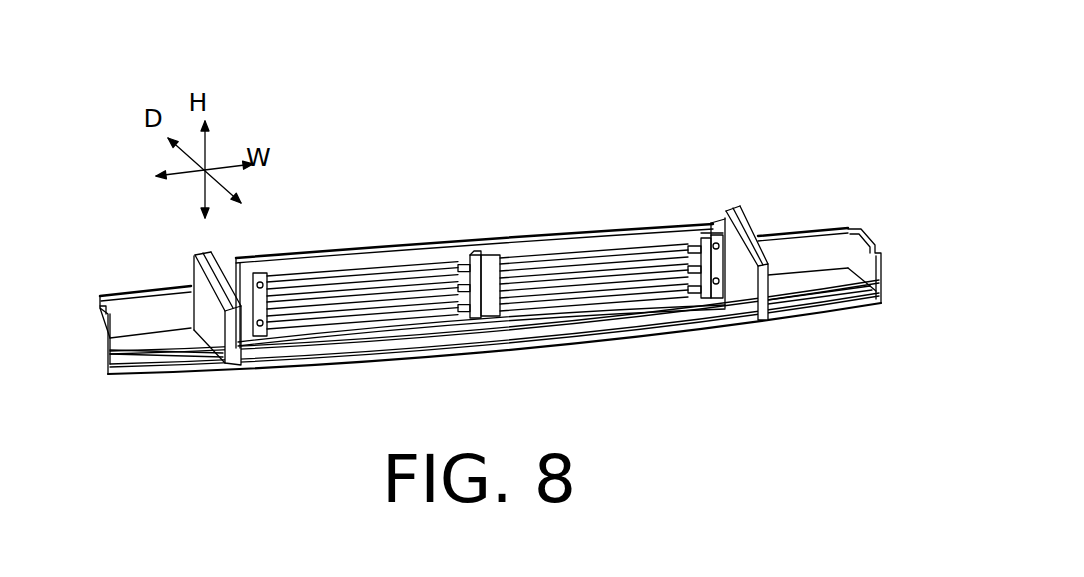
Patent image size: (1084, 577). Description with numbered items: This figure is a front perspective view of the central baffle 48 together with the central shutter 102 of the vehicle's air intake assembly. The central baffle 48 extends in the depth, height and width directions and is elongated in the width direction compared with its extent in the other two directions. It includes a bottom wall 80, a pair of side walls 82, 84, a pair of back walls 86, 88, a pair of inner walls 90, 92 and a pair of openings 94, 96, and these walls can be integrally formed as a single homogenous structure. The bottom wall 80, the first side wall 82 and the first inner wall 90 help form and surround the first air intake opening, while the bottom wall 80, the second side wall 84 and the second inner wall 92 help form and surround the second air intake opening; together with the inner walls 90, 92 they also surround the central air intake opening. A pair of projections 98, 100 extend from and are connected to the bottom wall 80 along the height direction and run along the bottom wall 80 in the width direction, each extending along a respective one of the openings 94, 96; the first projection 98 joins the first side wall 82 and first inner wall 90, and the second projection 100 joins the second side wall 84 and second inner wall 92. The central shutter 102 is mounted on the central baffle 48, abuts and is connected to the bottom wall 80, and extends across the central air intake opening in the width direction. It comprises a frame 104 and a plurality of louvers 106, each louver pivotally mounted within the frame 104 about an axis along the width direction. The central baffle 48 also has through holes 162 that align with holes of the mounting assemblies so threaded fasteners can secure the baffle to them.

The central baffle 48 is at (681, 347).
The bottom wall 80 is at (387, 362).
The first side wall 82 is at (875, 275).
The second side wall 84 is at (93, 337).
The first back wall 86 is at (827, 220).
The second back wall 88 is at (117, 284).
The first inner wall 90 is at (740, 208).
The second inner wall 92 is at (185, 252).
The first opening 94 is at (823, 275).
The second opening 96 is at (130, 335).
The first projection 98 is at (828, 293).
The second projection 100 is at (167, 350).
The central shutter 102 is at (393, 238).
The frame 104 is at (705, 214).
The louvers 106 is at (325, 315).
The through holes 162 is at (262, 290).